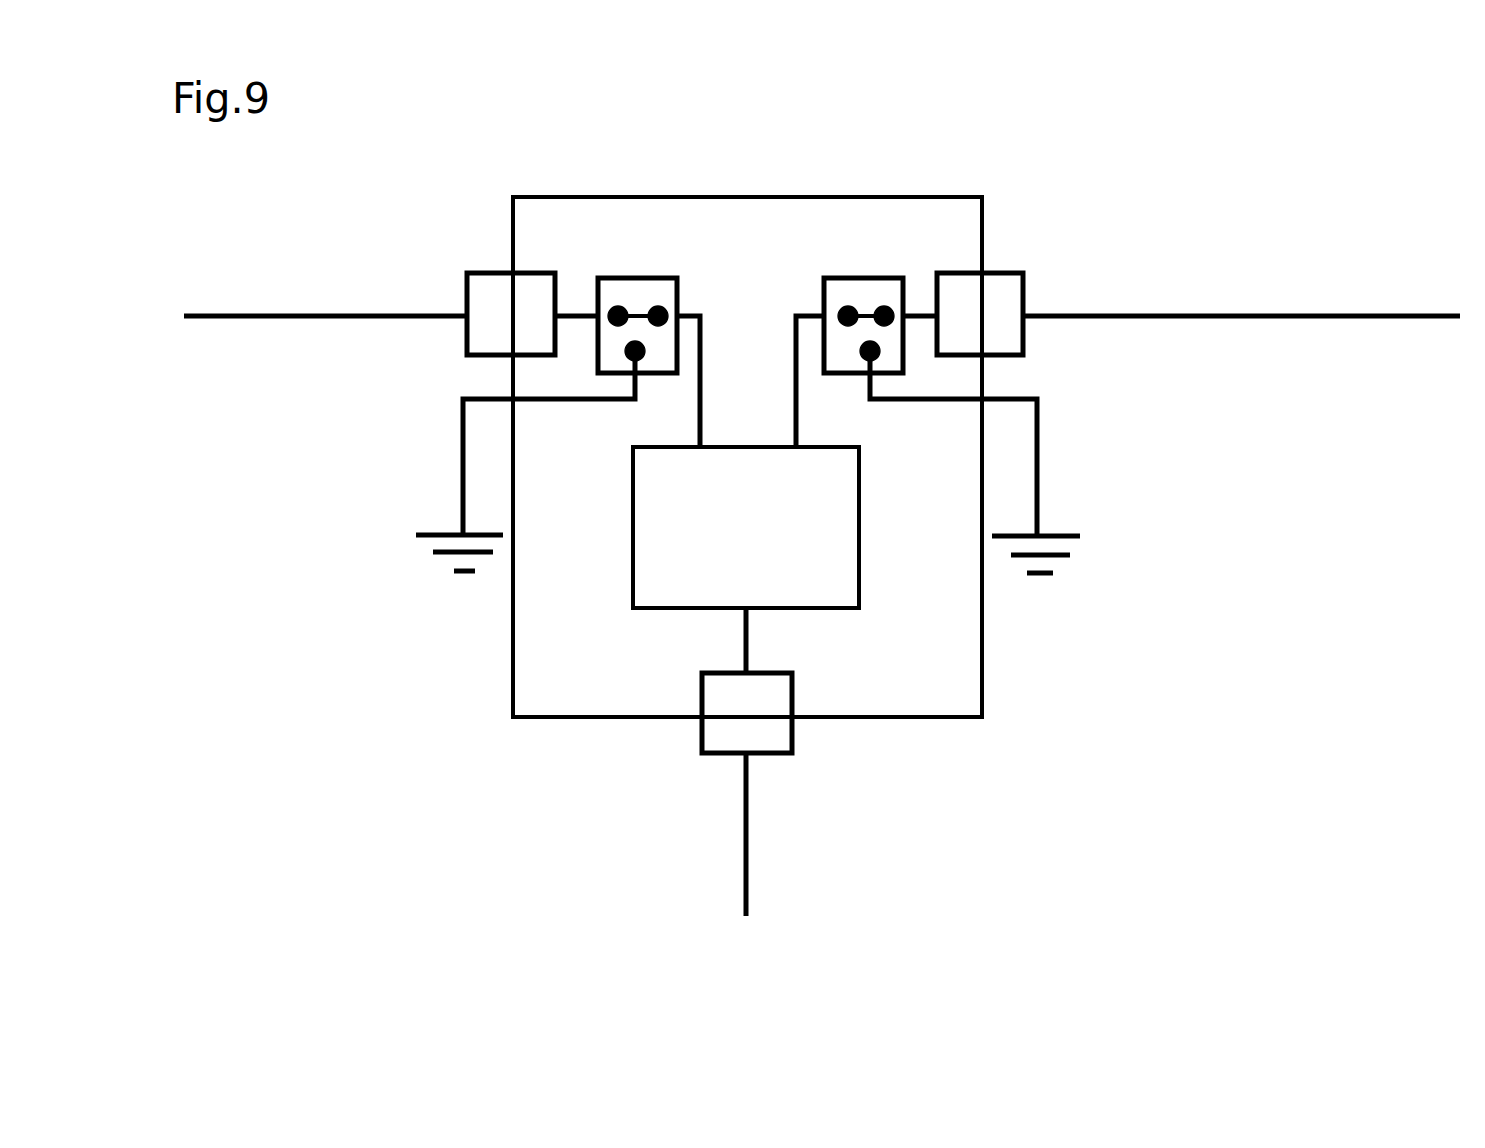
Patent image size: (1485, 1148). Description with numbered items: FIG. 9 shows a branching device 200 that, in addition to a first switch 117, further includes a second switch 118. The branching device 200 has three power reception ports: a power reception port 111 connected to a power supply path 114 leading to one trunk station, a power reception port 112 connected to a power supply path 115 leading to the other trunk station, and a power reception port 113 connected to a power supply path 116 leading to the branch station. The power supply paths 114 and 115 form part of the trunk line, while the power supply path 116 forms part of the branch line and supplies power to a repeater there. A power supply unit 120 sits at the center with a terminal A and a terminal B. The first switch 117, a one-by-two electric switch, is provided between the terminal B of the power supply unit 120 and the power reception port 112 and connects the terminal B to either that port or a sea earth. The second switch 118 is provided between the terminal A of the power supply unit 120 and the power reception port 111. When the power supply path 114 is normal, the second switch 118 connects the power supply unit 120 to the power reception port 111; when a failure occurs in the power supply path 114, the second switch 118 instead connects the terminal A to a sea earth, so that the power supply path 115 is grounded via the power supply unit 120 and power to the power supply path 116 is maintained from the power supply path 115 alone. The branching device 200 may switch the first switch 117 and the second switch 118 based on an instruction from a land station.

The branching device 200 is at (742, 195).
The power reception port 111 is at (465, 342).
The power reception port 112 is at (1009, 270).
The power reception port 113 is at (792, 737).
The power supply path 114 is at (358, 315).
The power supply path 115 is at (1273, 317).
The power supply path 116 is at (746, 833).
The first switch 117 is at (860, 278).
The second switch 118 is at (635, 273).
The power supply unit 120 is at (746, 560).